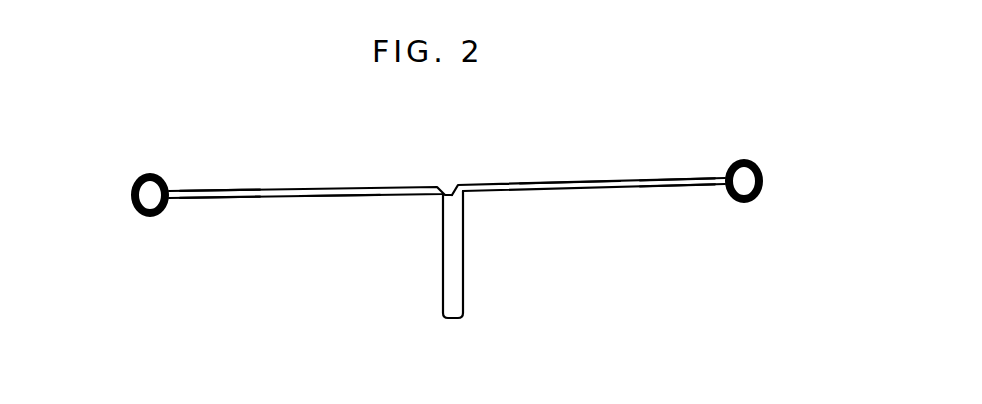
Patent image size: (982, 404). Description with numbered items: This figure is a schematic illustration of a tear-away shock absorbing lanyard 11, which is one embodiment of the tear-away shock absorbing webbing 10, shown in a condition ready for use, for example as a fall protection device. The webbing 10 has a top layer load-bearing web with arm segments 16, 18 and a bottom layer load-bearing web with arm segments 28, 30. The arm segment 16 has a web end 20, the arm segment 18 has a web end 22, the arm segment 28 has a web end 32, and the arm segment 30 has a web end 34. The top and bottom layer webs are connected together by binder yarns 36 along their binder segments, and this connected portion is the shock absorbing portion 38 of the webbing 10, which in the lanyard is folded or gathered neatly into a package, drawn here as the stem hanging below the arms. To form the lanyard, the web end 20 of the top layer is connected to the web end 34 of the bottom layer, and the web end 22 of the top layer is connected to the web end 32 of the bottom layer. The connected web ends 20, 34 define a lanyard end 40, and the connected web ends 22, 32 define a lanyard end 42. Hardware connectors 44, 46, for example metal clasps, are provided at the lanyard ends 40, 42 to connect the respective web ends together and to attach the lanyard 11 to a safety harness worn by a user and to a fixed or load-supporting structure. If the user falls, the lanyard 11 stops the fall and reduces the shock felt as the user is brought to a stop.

The tear-away shock absorbing webbing 10 is at (242, 76).
The tear-away shock absorbing lanyard 11 is at (636, 86).
The arm segment 16 is at (313, 188).
The arm segment 18 is at (523, 192).
The web end 20 is at (186, 190).
The web end 22 is at (705, 190).
The arm segment 28 is at (572, 183).
The arm segment 30 is at (345, 196).
The web end 32 is at (708, 178).
The web end 34 is at (186, 200).
The binder yarns 36 is at (450, 283).
The shock absorbing portion 38 is at (404, 307).
The lanyard end 40 is at (128, 248).
The lanyard end 42 is at (754, 221).
The hardware connector 44 is at (150, 172).
The hardware connector 46 is at (750, 160).